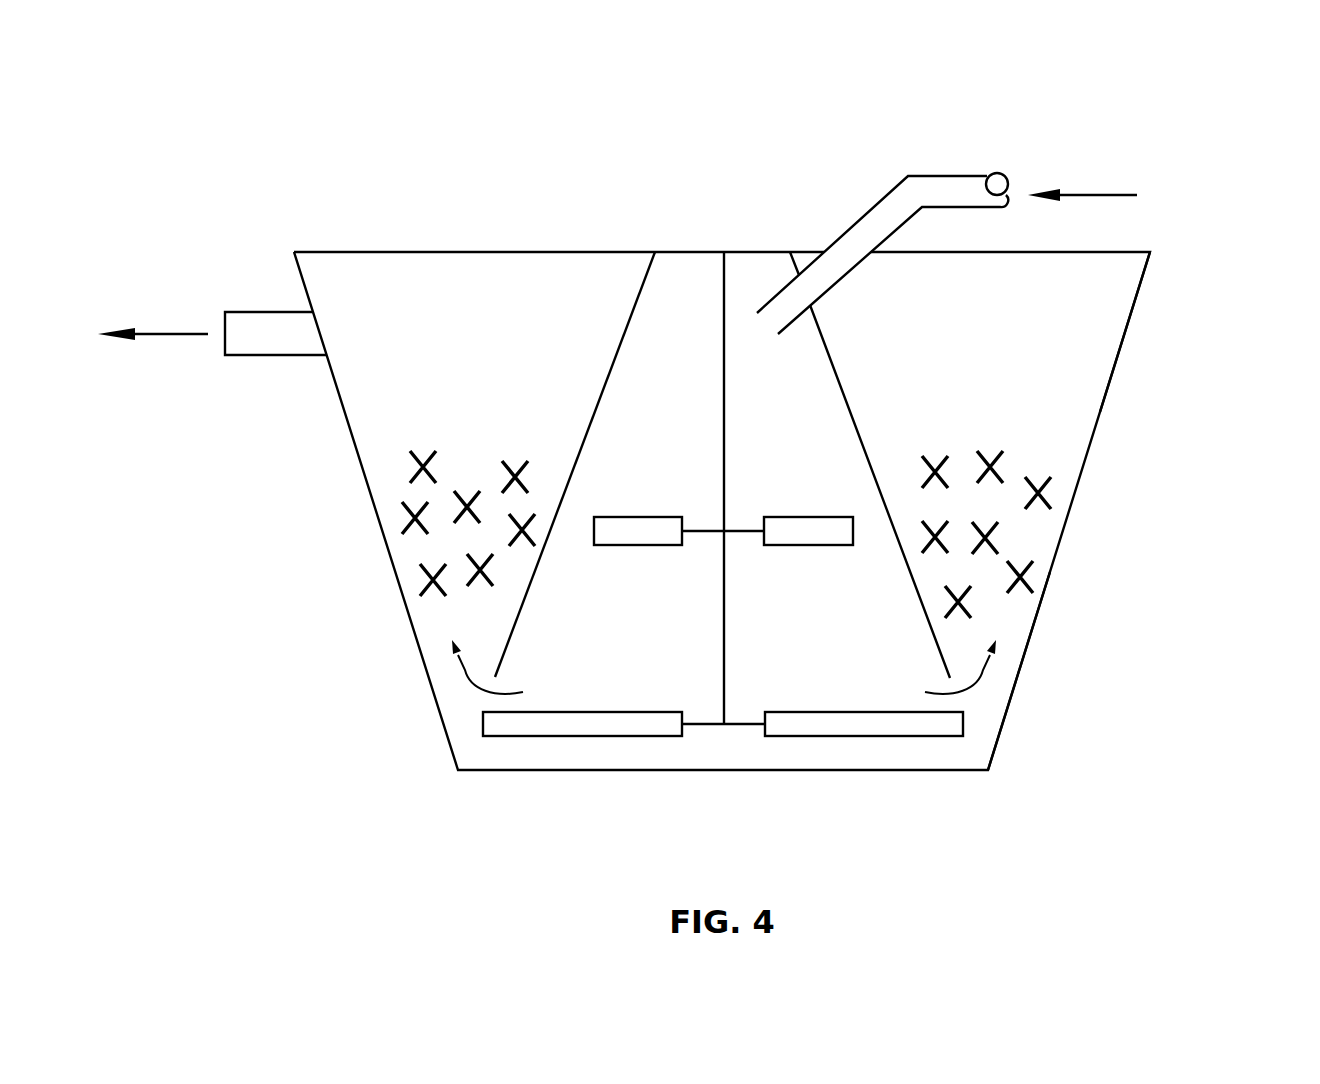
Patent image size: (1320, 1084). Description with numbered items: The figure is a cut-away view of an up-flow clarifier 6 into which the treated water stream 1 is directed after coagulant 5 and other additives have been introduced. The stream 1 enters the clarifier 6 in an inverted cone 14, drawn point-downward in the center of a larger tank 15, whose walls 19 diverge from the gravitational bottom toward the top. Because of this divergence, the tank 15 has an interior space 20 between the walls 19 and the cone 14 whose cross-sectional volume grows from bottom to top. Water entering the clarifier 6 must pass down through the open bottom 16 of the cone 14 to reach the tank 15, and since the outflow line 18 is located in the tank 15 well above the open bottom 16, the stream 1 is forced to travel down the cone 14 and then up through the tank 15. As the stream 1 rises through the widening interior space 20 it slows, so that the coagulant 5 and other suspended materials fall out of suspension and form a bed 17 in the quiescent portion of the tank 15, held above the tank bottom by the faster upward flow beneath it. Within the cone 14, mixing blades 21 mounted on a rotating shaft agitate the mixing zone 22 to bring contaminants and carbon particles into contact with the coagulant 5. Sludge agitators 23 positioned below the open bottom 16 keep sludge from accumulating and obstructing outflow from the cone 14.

The stream 1 is at (168, 334).
The coagulant 5 is at (1040, 490).
The clarifier 6 is at (1200, 135).
The inverted cone 14 is at (842, 386).
The tank 15 is at (1037, 620).
The open bottom 16 is at (846, 665).
The bed 17 is at (442, 537).
The outflow line 18 is at (277, 343).
The walls 19 is at (1126, 335).
The interior space 20 is at (490, 415).
The mixing blades 21 is at (807, 545).
The mixing zone 22 is at (642, 633).
The sludge agitators 23 is at (908, 723).